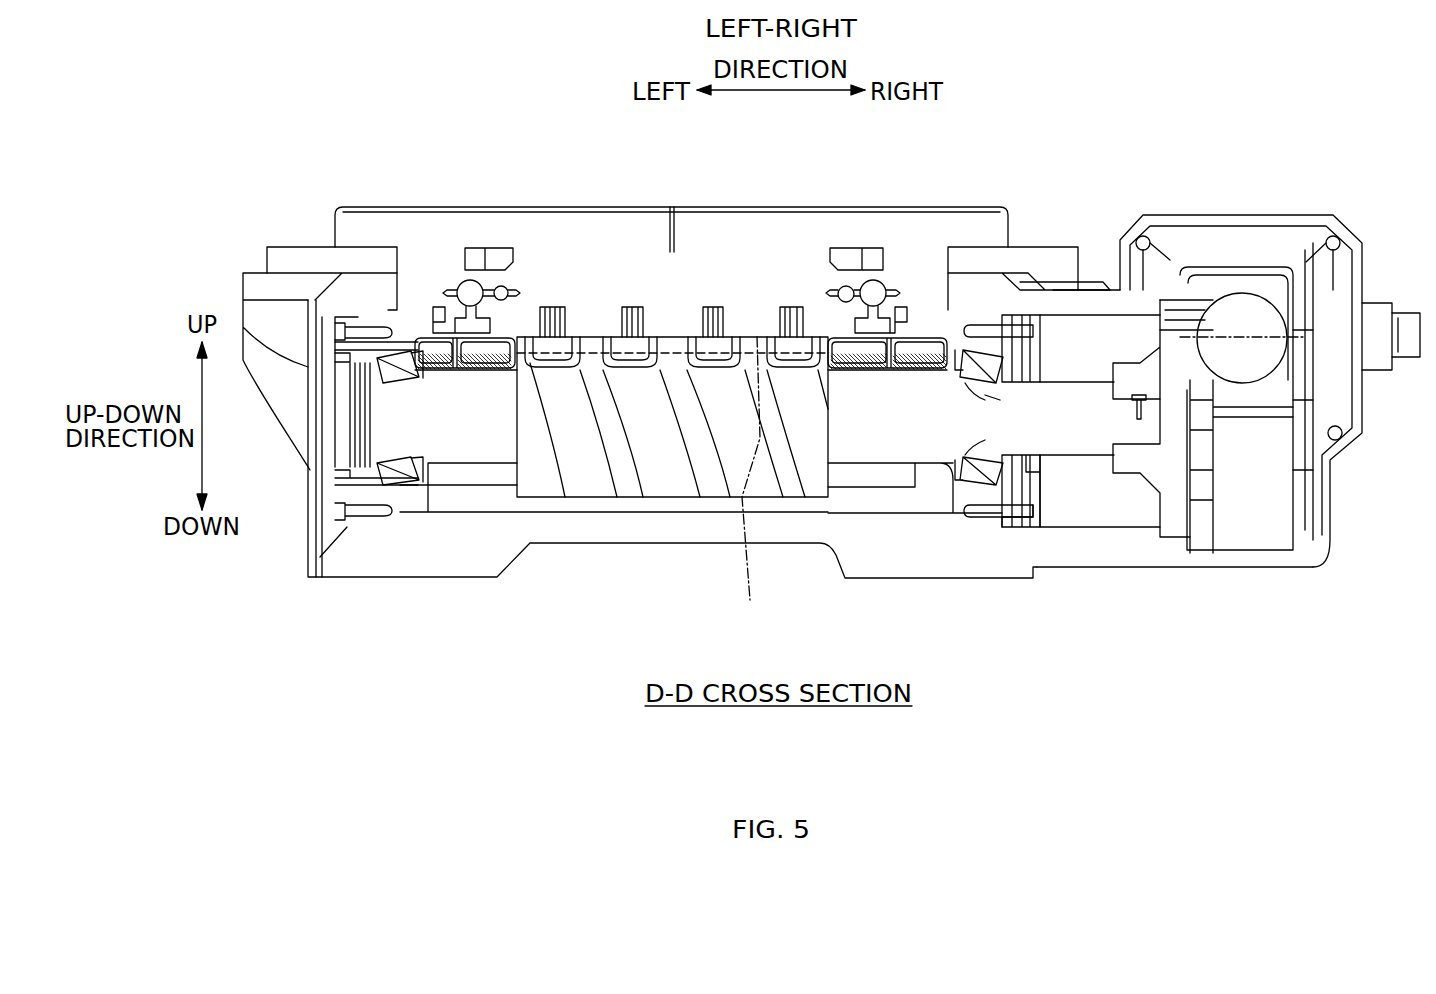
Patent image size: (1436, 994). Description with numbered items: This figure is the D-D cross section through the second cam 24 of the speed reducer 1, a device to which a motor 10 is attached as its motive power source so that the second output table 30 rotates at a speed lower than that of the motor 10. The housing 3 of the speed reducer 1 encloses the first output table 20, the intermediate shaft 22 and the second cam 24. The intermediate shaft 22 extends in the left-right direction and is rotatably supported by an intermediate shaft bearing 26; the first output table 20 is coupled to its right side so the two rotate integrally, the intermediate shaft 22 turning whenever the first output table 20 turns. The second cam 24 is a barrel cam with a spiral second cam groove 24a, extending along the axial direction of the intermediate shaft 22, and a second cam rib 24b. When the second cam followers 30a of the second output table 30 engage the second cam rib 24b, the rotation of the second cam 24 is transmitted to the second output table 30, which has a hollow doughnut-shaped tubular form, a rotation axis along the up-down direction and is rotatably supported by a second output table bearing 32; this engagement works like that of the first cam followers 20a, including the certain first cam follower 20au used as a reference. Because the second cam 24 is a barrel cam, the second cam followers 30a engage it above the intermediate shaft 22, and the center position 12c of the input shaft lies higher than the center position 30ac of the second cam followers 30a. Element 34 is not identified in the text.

The speed reducer 1 is at (1189, 97).
The housing 3 is at (880, 552).
The motor 10 is at (1387, 307).
The center position of the input shaft 12c is at (1257, 337).
The first output table 20 is at (1172, 522).
The first cam followers 20a is at (1200, 513).
The certain first cam follower 20au is at (1197, 303).
The intermediate shaft 22 is at (1068, 433).
The second cam 24 is at (537, 487).
The second cam groove 24a is at (667, 487).
The second cam rib 24b is at (627, 487).
The intermediate shaft bearing 26 is at (392, 470).
The second output table 30 is at (778, 222).
The second cam followers 30a is at (550, 322).
The center position of the second cam followers 30ac is at (758, 486).
The second output table bearing 32 is at (470, 275).
The slit 34 is at (713, 207).